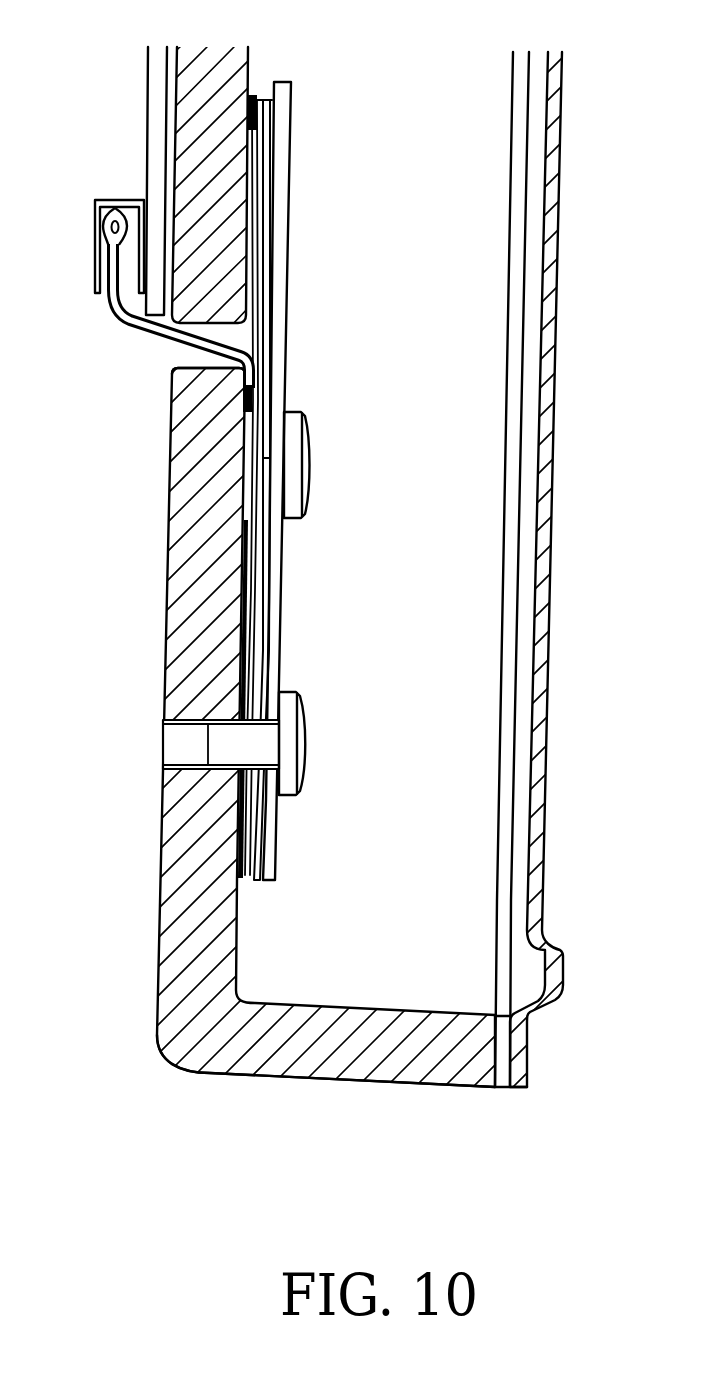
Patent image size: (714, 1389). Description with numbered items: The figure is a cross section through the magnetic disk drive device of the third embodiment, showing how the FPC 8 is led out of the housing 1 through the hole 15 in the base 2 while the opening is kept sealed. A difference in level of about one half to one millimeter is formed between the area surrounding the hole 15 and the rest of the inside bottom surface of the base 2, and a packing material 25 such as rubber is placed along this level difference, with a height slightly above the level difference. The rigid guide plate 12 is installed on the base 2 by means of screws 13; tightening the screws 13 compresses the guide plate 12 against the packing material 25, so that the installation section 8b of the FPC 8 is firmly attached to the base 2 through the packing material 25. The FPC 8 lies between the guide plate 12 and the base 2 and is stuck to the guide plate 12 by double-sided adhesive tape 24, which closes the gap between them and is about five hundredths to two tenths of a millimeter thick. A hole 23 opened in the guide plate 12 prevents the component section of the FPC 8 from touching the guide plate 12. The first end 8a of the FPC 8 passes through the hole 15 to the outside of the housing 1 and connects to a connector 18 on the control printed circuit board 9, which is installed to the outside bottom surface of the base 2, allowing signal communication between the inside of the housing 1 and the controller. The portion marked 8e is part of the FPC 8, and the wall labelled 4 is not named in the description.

The housing 1 is at (160, 1048).
The base 2 is at (172, 630).
The outer panel 4 is at (560, 245).
The FPC 8 is at (250, 597).
The first end of the FPC 8a is at (108, 293).
The installation section 8b is at (263, 99).
The engaging portion of sheet 8e is at (243, 397).
The control printed circuit board 9 is at (152, 155).
The guide plate 12 is at (288, 338).
The screws 13 is at (313, 462).
The hole 15 is at (178, 350).
The connector 18 is at (95, 215).
The hole 23 is at (268, 652).
The double-sided adhesive tape 24 is at (263, 275).
The packing material 25 is at (249, 97).